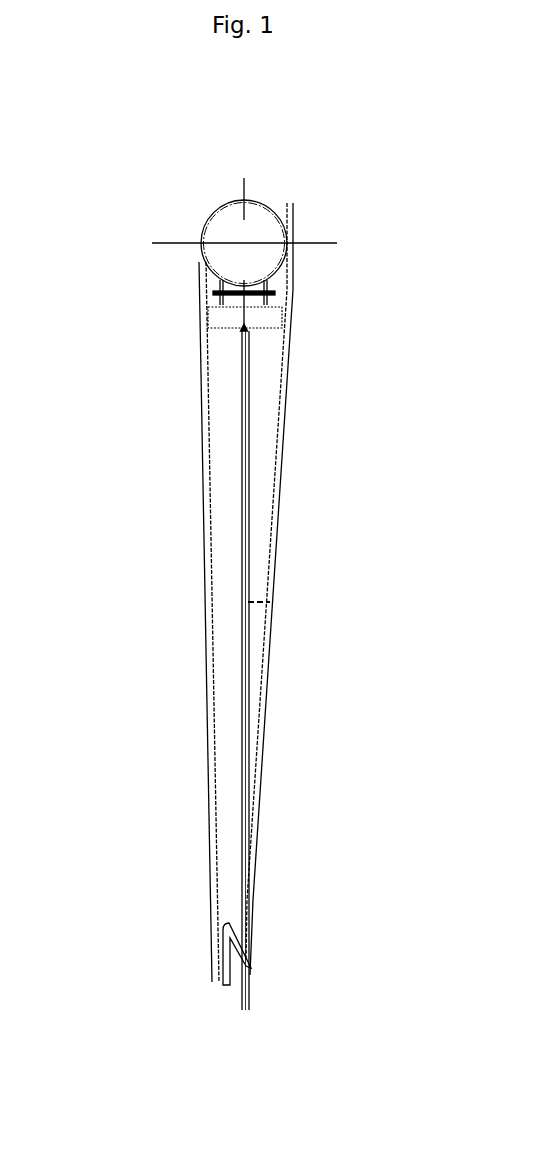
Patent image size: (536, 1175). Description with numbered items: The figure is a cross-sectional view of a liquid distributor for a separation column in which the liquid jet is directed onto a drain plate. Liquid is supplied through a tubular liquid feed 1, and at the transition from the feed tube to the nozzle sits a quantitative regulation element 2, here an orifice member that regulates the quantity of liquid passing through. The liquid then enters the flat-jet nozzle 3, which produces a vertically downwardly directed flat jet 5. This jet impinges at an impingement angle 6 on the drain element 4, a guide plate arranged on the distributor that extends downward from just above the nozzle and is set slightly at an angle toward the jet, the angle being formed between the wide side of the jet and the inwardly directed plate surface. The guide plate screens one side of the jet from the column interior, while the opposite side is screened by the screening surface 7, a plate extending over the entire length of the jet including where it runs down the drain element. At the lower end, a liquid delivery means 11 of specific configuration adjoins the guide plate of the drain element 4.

The tubular liquid feed 1 is at (273, 208).
The quantitative regulation element 2 is at (277, 293).
The flat-jet nozzle 3 is at (267, 315).
The drain element 4 is at (283, 436).
The flat jet 5 is at (249, 522).
The impingement angle 6 is at (260, 626).
The screening surface 7 is at (200, 458).
The liquid delivery means 11 is at (196, 947).